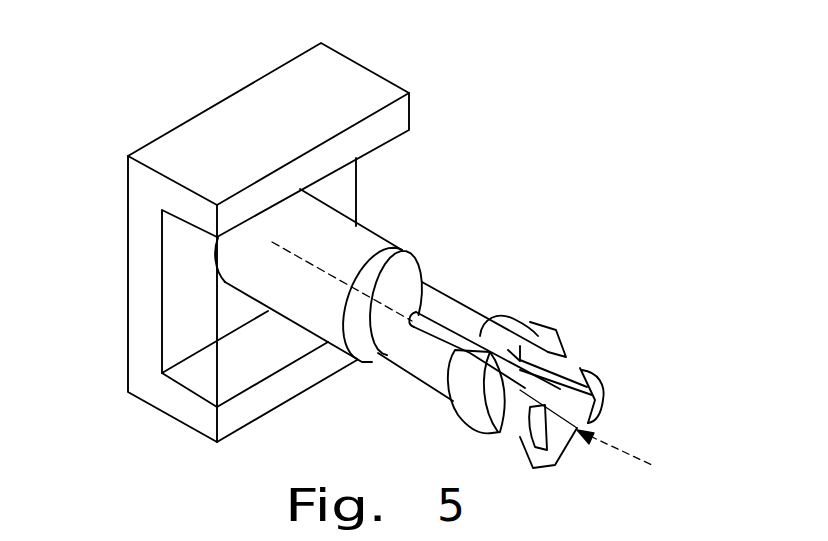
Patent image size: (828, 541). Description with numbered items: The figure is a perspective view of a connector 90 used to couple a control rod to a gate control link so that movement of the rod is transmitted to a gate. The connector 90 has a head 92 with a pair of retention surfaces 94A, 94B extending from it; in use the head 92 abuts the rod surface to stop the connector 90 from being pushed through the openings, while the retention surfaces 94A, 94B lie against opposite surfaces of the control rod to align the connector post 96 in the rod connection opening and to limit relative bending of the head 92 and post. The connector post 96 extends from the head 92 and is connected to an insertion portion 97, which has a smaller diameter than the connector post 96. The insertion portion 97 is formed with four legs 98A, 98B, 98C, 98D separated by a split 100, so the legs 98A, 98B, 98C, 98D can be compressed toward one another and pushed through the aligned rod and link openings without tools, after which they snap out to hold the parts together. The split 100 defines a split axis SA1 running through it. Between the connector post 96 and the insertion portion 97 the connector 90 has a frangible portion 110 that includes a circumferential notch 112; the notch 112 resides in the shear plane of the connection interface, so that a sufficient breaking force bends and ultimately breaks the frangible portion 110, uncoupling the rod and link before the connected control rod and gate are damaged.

The connector 90 is at (430, 88).
The head 92 is at (146, 273).
The retention surface 94A is at (388, 140).
The retention surface 94B is at (225, 405).
The connector post 96 is at (333, 222).
The insertion portion 97 is at (430, 285).
The leg 98A is at (508, 327).
The leg 98B is at (472, 417).
The leg 98C is at (530, 468).
The leg 98D is at (600, 387).
The split 100 is at (580, 437).
The frangible portion 110 is at (375, 367).
The notch 112 is at (398, 280).
The split axis SA1 is at (630, 450).